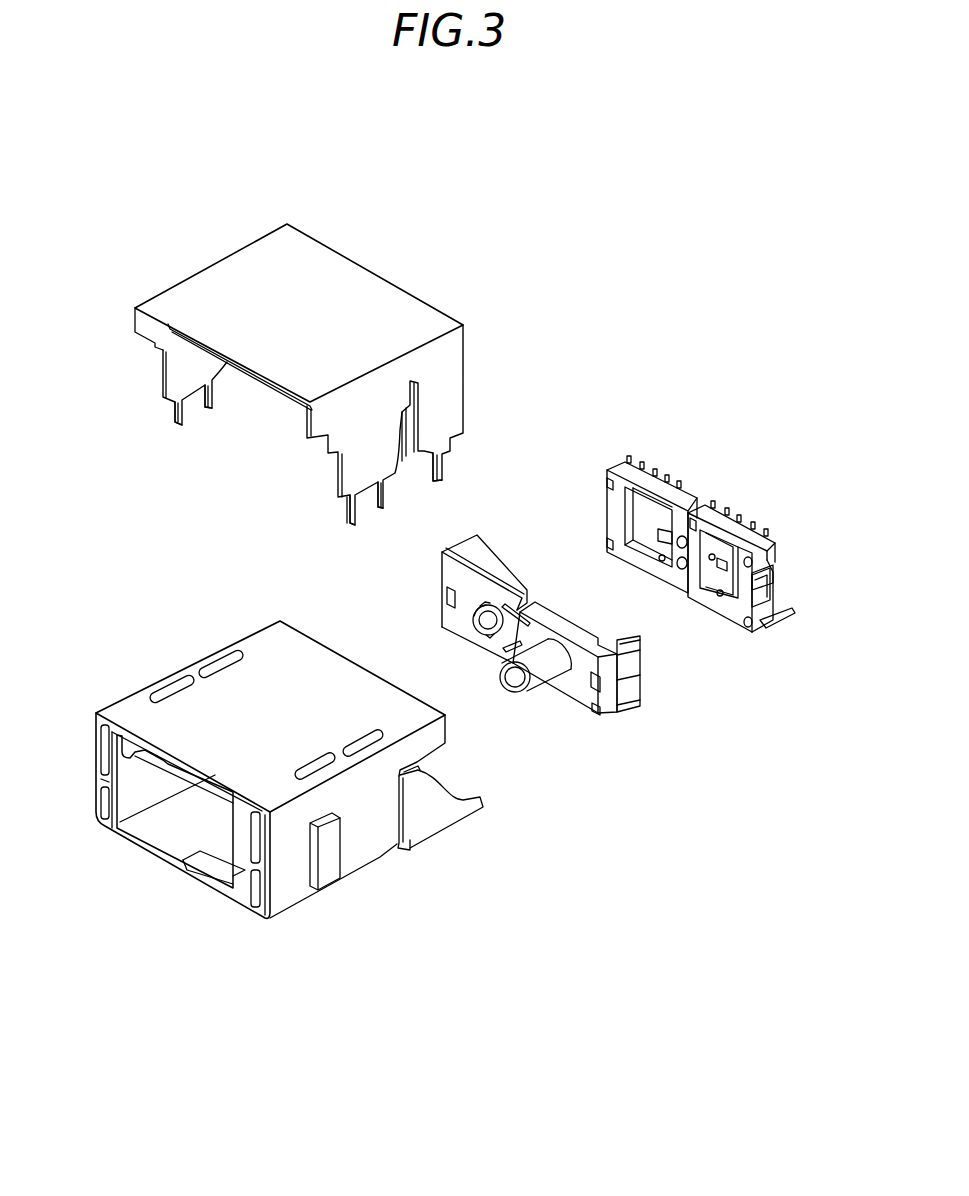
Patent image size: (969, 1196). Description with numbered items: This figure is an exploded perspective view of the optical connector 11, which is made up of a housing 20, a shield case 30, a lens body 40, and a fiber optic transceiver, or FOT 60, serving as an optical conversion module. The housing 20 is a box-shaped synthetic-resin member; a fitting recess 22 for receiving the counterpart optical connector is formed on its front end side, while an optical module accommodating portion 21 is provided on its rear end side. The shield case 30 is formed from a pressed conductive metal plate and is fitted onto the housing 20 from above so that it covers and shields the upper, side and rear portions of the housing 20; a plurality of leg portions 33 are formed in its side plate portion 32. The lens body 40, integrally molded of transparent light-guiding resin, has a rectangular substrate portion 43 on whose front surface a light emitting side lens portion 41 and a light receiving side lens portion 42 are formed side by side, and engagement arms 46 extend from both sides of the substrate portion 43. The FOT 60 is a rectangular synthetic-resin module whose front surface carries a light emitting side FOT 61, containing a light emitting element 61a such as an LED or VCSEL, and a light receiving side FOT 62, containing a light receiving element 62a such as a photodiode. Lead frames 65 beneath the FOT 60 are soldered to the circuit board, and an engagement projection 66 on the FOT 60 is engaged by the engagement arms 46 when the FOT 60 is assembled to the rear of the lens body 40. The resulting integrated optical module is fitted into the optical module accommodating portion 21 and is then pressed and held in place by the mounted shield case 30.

The optical connector 11 is at (586, 315).
The housing 20 is at (191, 664).
The optical module accommodating portion 21 is at (420, 770).
The fitting recess 22 is at (160, 826).
The shield case 30 is at (252, 240).
The side plate portion 32 is at (402, 372).
The leg portions 33 is at (210, 409).
The lens body 40 is at (607, 716).
The light emitting side lens portion 41 is at (480, 631).
The light receiving side lens portion 42 is at (546, 690).
The substrate portion 43 is at (497, 556).
The engagement arms 46 is at (638, 690).
The fiber optic transceiver (FOT) 60 is at (761, 640).
The light emitting side FOT 61 is at (658, 472).
The light emitting element 61a is at (660, 536).
The light receiving side FOT 62 is at (748, 521).
The light receiving element 62a is at (718, 573).
The lead frames 65 is at (786, 612).
The engagement projection 66 is at (738, 626).